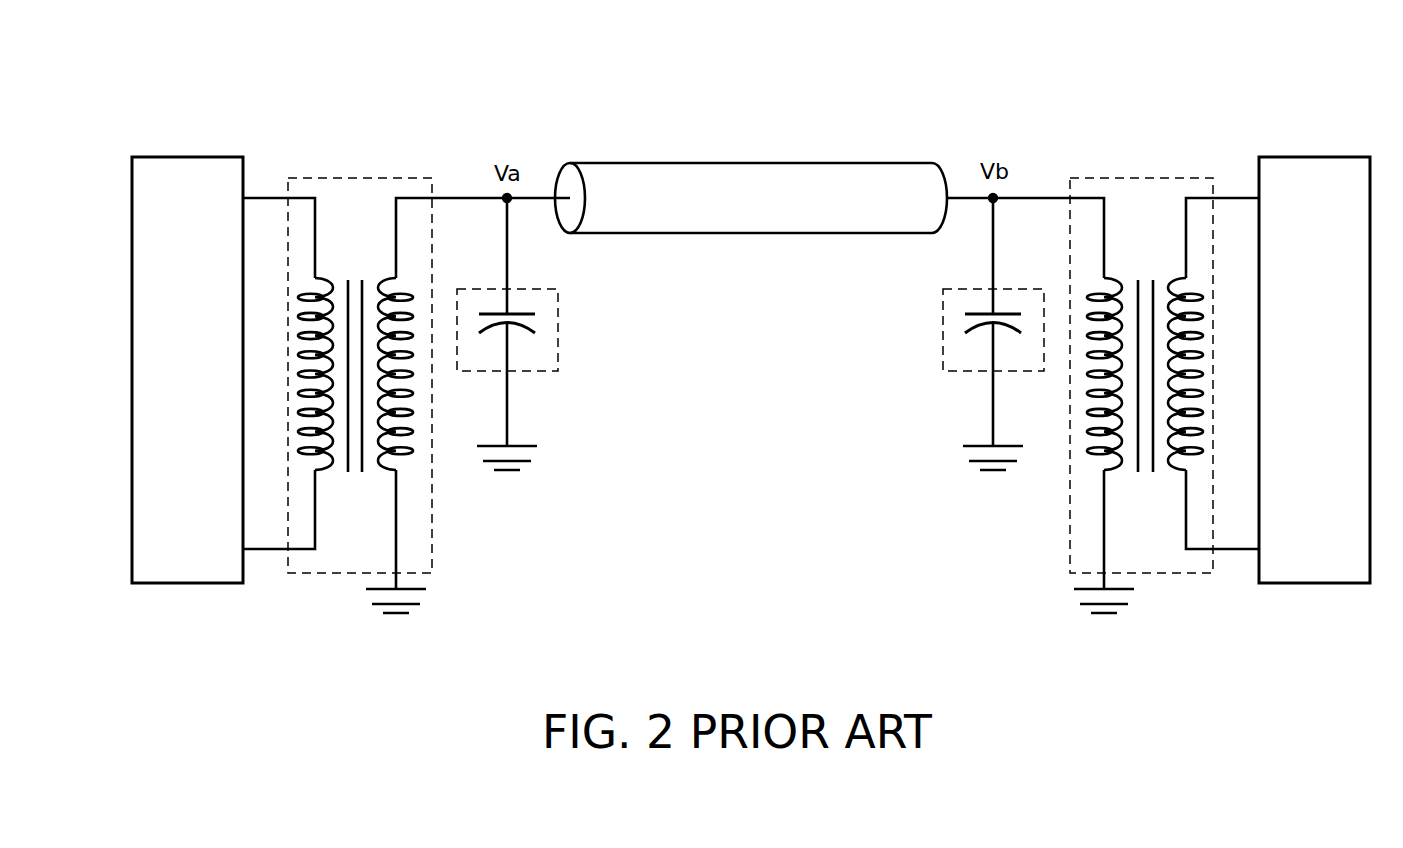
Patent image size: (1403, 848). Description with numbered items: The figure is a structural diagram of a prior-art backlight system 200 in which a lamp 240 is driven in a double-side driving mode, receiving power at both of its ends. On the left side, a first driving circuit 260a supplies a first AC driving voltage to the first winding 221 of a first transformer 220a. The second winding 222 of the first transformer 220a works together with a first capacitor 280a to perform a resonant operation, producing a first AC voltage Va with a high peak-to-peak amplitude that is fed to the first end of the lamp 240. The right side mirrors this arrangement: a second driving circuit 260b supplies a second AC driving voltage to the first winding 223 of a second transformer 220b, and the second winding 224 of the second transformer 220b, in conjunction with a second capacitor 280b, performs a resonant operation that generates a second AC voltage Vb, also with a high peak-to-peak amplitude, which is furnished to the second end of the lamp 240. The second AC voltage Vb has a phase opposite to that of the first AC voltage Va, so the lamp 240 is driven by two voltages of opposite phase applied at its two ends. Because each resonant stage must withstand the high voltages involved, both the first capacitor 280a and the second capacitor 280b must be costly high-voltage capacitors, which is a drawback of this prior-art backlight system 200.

The backlight system 200 is at (1152, 78).
The first transformer 220a is at (381, 370).
The second transformer 220b is at (1122, 370).
The first winding of the first transformer 221 is at (310, 451).
The second winding of the first transformer 222 is at (412, 449).
The first winding of the second transformer 223 is at (1203, 449).
The second winding of the second transformer 224 is at (1088, 449).
The lamp 240 is at (748, 218).
The first driving circuit 260a is at (187, 157).
The second driving circuit 260b is at (1312, 157).
The first capacitor 280a is at (558, 363).
The second capacitor 280b is at (944, 363).